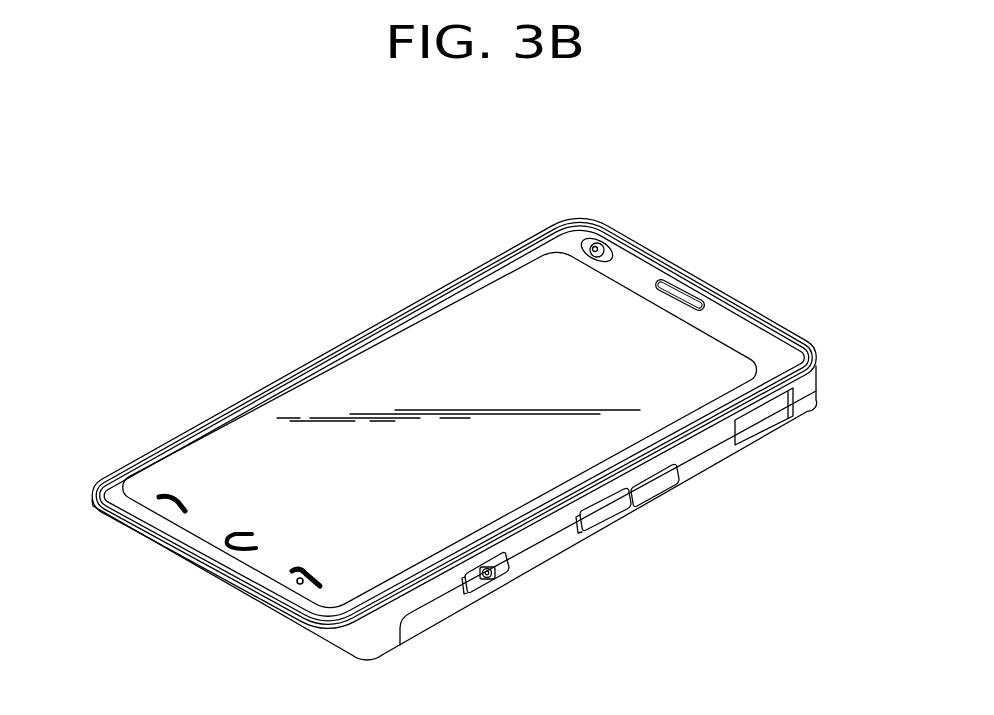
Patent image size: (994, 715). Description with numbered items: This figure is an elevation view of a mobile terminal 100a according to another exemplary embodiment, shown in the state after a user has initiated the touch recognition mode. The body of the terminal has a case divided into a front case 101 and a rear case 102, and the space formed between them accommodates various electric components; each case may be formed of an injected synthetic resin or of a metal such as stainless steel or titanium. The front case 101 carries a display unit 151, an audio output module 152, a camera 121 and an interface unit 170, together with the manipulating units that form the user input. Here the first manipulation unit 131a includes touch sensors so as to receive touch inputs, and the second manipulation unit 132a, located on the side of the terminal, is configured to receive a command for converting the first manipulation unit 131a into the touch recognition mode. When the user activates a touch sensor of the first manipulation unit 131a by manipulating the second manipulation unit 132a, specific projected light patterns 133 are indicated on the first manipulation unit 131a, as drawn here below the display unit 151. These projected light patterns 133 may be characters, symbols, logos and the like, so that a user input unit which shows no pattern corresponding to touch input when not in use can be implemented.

The mobile terminal 100a is at (406, 274).
The front case 101 is at (810, 379).
The rear case 102 is at (808, 402).
The camera 121 is at (608, 243).
The display unit 151 is at (380, 348).
The audio output module 152 is at (683, 298).
The first manipulation unit 131a is at (148, 491).
The projected light patterns 133 is at (172, 492).
The interface unit 170 is at (763, 421).
The second manipulation unit 132a is at (603, 513).